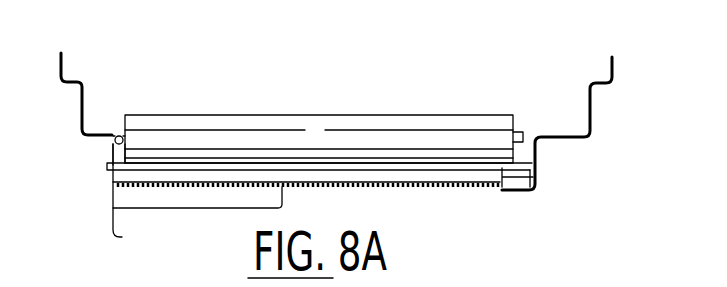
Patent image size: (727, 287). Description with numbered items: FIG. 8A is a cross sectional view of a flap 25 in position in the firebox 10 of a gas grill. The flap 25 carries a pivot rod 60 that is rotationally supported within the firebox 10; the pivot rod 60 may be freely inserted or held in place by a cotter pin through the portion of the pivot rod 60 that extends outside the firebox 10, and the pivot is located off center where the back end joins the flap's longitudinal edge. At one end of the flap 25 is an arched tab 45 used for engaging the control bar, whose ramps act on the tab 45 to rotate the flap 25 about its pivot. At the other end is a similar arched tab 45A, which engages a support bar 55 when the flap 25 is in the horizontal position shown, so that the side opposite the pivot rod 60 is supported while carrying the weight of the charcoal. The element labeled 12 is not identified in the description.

The firebox 10 is at (575, 147).
The rail 12 is at (425, 184).
The flap 25 is at (398, 122).
The arched tab 45 is at (120, 137).
The arched tab 45A is at (522, 134).
The support bar 55 is at (528, 182).
The pivot rod 60 is at (115, 137).